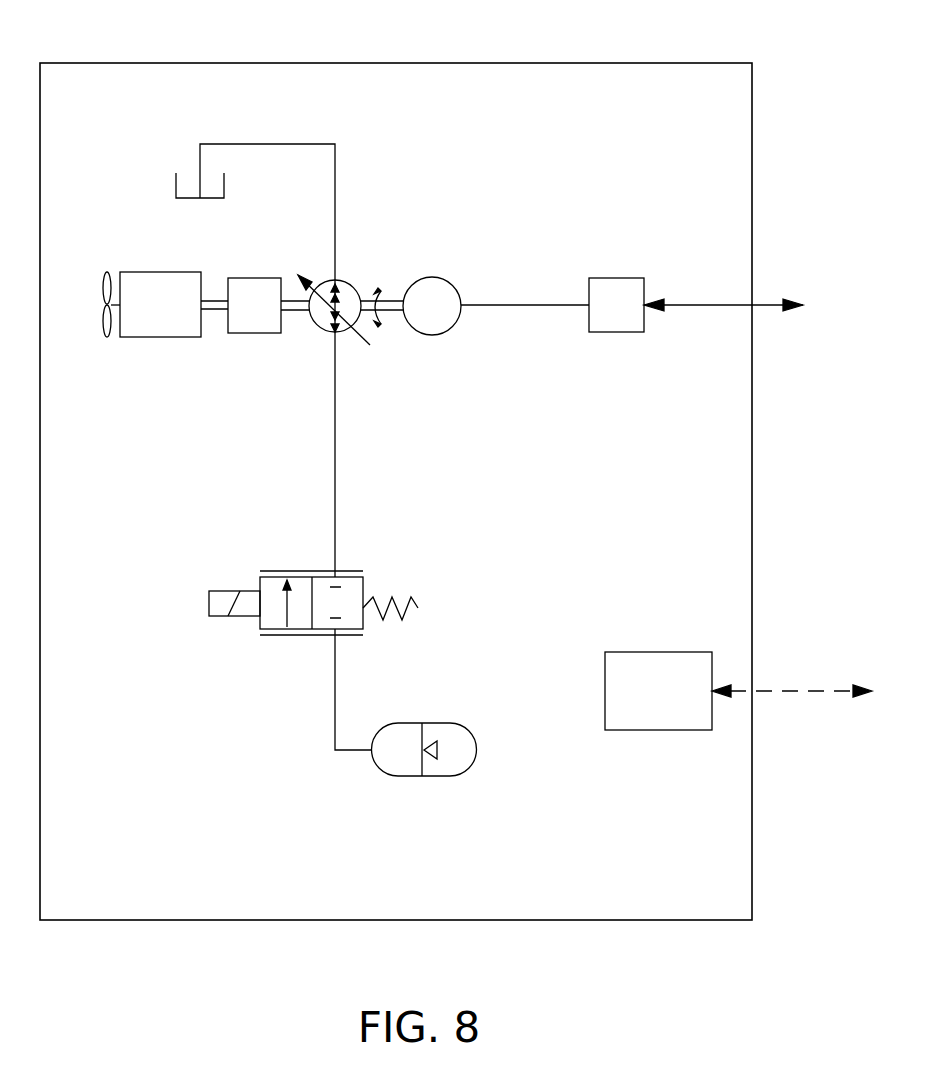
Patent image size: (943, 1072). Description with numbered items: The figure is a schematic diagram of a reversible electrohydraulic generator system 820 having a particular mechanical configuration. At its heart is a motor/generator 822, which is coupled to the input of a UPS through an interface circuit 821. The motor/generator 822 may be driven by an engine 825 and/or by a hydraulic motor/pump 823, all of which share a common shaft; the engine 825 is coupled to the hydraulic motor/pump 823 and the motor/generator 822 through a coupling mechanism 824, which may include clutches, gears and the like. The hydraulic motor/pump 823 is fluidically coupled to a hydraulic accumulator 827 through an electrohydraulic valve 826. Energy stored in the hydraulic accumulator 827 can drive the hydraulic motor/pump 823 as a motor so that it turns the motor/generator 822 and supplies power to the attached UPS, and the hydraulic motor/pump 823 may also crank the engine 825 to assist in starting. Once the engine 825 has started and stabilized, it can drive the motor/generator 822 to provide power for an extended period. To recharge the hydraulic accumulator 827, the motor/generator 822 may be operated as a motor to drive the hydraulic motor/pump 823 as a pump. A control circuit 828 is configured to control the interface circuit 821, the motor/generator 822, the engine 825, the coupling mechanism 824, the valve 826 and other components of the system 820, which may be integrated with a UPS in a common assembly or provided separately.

The electrohydraulic generator system 820 is at (395, 63).
The interface circuit 821 is at (616, 332).
The motor/generator 822 is at (432, 335).
The hydraulic motor/pump 823 is at (352, 284).
The coupling mechanism 824 is at (253, 278).
The engine 825 is at (160, 272).
The electrohydraulic valve 826 is at (357, 633).
The hydraulic accumulator 827 is at (405, 723).
The control circuit 828 is at (658, 730).